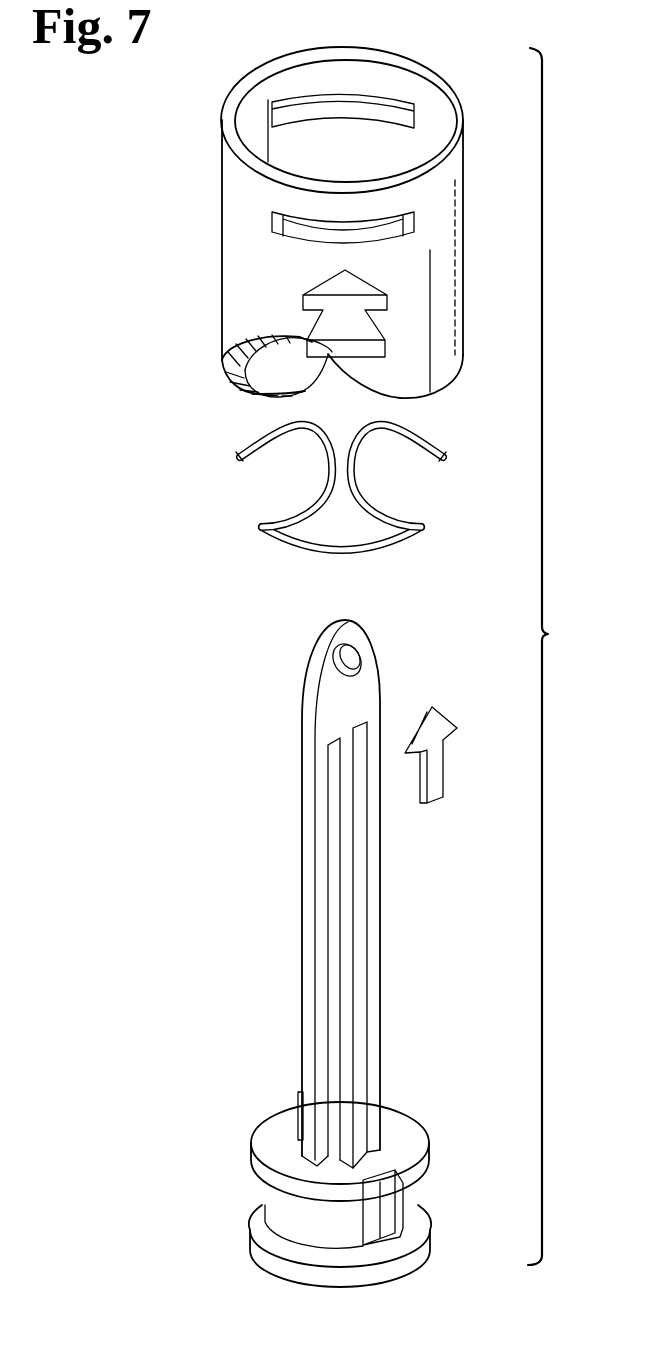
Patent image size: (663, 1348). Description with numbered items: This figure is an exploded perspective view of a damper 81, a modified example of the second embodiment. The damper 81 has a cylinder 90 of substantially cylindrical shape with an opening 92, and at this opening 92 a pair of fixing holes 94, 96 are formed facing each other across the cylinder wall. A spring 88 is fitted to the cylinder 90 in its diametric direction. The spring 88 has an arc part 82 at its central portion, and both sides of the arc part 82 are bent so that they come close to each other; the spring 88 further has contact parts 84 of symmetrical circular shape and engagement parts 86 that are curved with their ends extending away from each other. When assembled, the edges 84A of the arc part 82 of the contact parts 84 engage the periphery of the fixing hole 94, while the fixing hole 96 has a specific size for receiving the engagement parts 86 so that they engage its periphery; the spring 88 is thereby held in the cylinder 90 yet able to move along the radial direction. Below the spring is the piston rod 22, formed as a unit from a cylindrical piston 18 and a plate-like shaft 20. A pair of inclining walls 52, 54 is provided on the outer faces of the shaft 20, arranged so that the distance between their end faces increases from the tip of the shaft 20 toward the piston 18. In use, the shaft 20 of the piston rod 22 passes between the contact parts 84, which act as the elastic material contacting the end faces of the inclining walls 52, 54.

The damper 81 is at (561, 656).
The cylinder 90 is at (433, 197).
The opening 92 is at (423, 107).
The fixing hole 96 is at (338, 104).
The fixing hole 94 is at (387, 235).
The spring 88 is at (343, 494).
The arc part 82 is at (355, 555).
The contact parts 84 is at (357, 476).
The engagement parts 86 is at (432, 445).
The edges 84A is at (423, 528).
The shaft 20 is at (340, 894).
The inclining wall 52 is at (370, 1062).
The inclining wall 54 is at (300, 1133).
The piston rod 22 is at (412, 882).
The piston 18 is at (410, 1128).